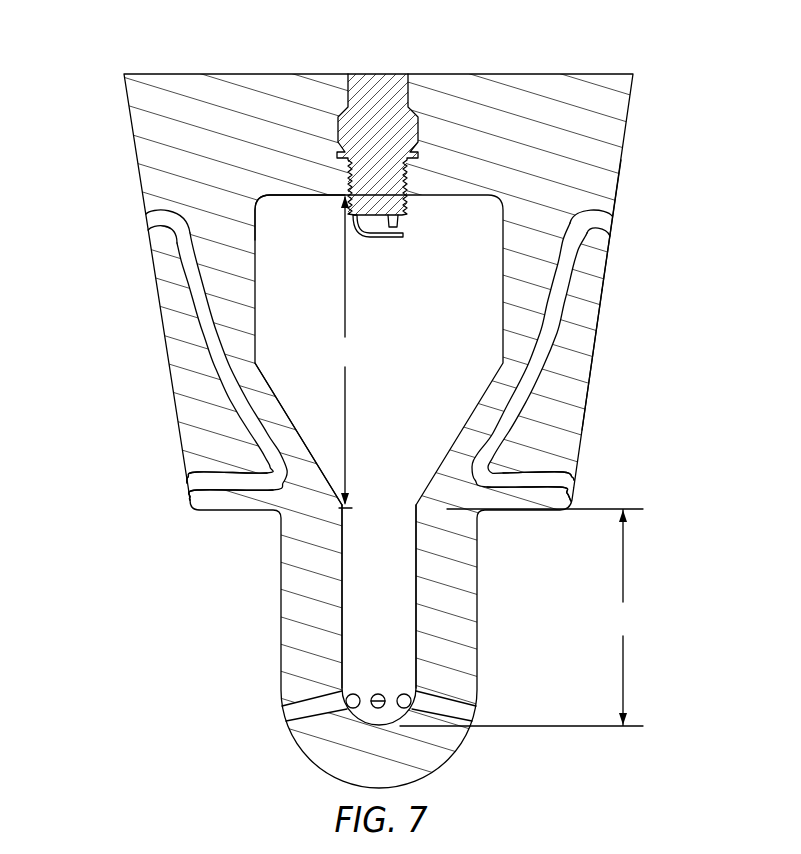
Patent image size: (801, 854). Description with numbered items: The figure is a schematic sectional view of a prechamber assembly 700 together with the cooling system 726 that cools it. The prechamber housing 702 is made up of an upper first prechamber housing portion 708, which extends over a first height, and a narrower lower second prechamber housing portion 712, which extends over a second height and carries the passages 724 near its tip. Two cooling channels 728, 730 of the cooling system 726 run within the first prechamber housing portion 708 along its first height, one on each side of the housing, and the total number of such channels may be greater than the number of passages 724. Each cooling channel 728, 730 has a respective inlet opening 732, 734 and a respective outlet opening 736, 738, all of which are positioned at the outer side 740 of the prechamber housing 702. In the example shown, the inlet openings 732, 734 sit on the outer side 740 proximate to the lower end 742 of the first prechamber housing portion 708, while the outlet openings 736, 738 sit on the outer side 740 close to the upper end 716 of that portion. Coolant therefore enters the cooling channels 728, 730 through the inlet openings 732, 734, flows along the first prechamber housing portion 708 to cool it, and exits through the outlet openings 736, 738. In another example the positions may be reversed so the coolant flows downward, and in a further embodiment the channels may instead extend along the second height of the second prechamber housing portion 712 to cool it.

The prechamber assembly 700 is at (719, 68).
The prechamber housing 702 is at (646, 154).
The first prechamber housing portion 708 is at (238, 224).
The second prechamber housing portion 712 is at (323, 597).
The upper end 716 is at (248, 181).
The passages 724 is at (460, 712).
The cooling system 726 is at (637, 198).
The cooling channel 728 is at (200, 288).
The cooling channel 730 is at (556, 290).
The inlet opening 732 is at (187, 487).
The inlet opening 734 is at (580, 480).
The outlet opening 736 is at (146, 214).
The outlet opening 738 is at (612, 222).
The outer side 740 is at (605, 362).
The lower end 742 is at (305, 508).